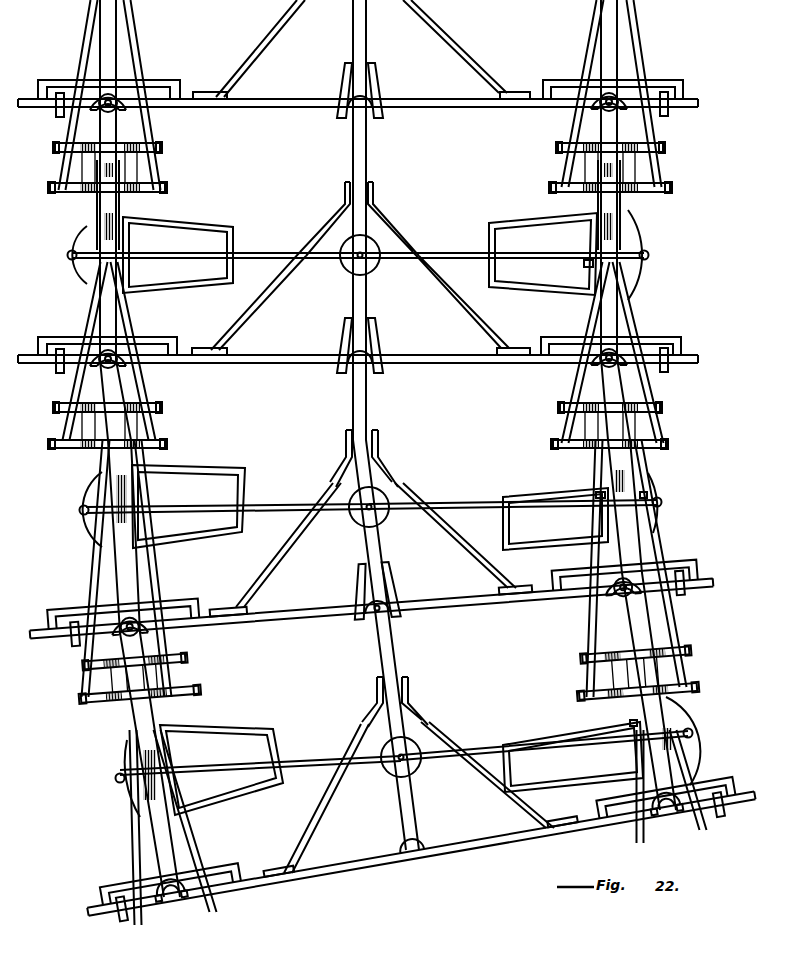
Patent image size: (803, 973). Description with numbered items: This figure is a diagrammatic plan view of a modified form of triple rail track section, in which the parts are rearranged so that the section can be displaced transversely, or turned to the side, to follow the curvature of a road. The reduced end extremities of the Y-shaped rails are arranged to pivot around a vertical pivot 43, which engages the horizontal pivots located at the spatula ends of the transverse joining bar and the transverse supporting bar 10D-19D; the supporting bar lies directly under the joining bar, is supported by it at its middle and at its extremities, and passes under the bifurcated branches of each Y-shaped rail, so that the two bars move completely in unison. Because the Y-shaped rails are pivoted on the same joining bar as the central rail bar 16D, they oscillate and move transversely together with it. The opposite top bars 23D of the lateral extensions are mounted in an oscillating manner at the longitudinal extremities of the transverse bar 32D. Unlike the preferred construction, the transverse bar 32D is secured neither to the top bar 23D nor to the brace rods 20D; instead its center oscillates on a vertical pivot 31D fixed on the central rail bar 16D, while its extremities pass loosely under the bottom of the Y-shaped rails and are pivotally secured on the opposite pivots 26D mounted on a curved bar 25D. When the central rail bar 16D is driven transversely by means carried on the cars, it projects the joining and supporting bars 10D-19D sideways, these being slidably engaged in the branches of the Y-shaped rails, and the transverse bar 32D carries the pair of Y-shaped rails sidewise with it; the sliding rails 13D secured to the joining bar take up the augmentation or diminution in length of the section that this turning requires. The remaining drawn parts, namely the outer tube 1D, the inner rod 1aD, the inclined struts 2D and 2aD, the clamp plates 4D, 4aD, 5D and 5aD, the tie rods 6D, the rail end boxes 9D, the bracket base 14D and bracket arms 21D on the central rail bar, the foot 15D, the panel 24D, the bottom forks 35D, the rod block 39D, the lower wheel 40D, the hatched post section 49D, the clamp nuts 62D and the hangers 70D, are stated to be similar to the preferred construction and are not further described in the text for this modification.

The outer tube of post 1D is at (97, 202).
The inner rod of post 1aD is at (120, 207).
The left inclined strut 2D is at (68, 417).
The right inclined strut 2aD is at (147, 392).
The lower clamp plate 4D is at (93, 444).
The lower clamp plate 4aD is at (168, 190).
The upper clamp plate 5D is at (115, 693).
The upper clamp plate 5aD is at (127, 143).
The tie rods 6D is at (115, 681).
The rail end box 9D is at (653, 337).
The transverse joining bar and transverse supporting bar 10D-19D is at (238, 103).
The sliding rail 13D is at (108, 50).
The bracket base on center post 14D is at (345, 112).
The foot of center post 15D is at (415, 856).
The central rail bar 16D is at (357, 308).
The brace rod 20D is at (250, 320).
The bracket arm 21D is at (380, 88).
The top bar 23D is at (230, 277).
The panel 24D is at (190, 228).
The curved bar 25D is at (80, 287).
The pivot 26D is at (72, 258).
The vertical pivot 31D is at (372, 262).
The transverse bar 32D is at (247, 255).
The bottom fork 35D is at (185, 907).
The rod block 39D is at (585, 265).
The lower wheel 40D is at (143, 758).
The vertical pivot 43 is at (113, 97).
The hatched post section 49D is at (127, 503).
The clamp nut 62D is at (163, 190).
The hanger 70D is at (58, 110).